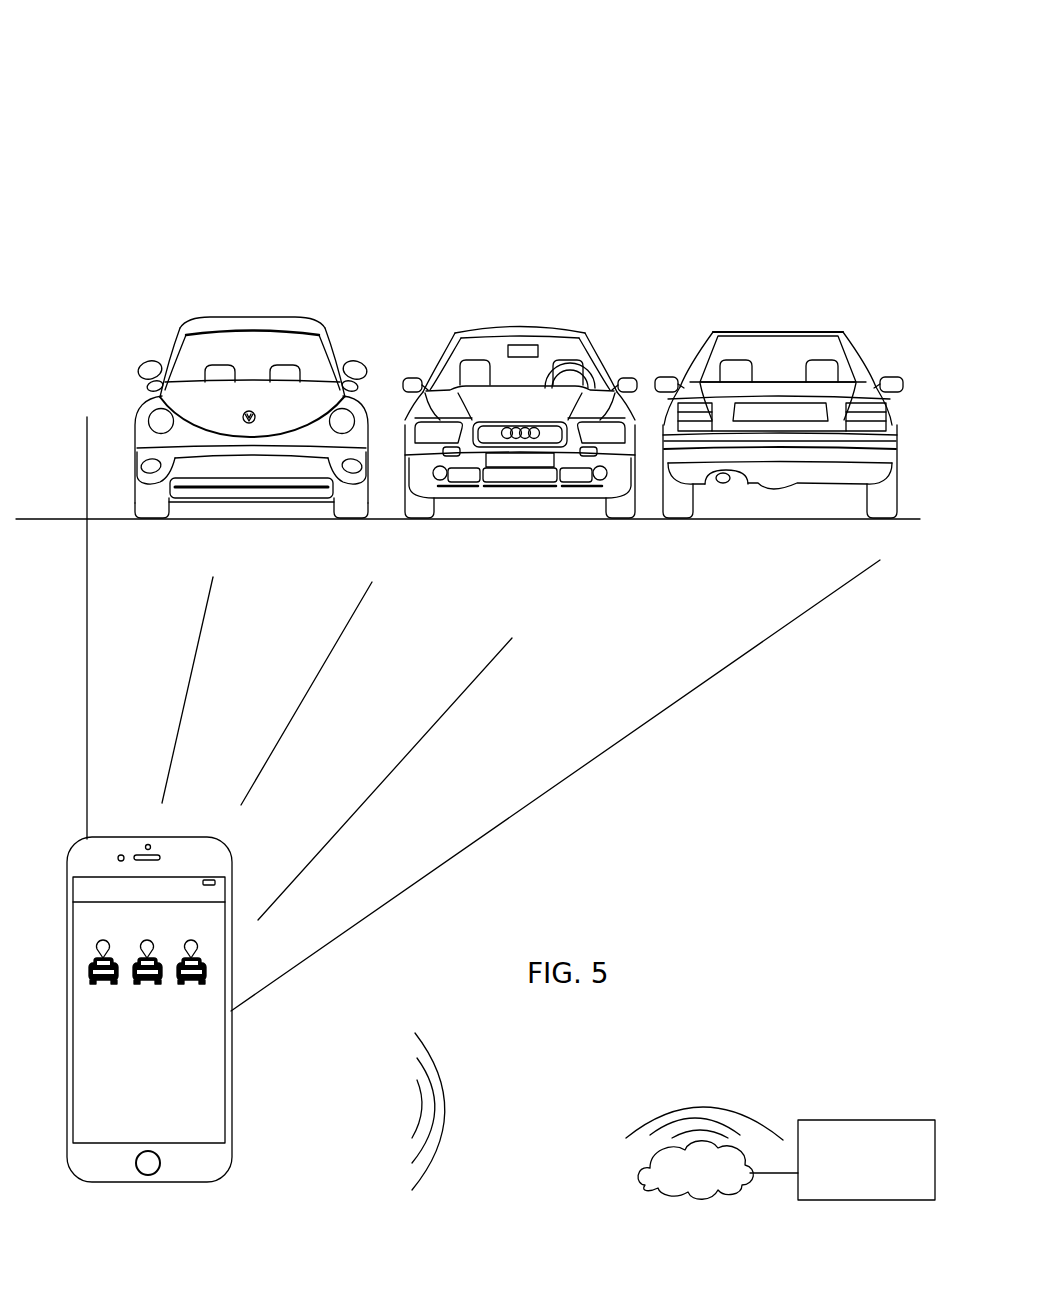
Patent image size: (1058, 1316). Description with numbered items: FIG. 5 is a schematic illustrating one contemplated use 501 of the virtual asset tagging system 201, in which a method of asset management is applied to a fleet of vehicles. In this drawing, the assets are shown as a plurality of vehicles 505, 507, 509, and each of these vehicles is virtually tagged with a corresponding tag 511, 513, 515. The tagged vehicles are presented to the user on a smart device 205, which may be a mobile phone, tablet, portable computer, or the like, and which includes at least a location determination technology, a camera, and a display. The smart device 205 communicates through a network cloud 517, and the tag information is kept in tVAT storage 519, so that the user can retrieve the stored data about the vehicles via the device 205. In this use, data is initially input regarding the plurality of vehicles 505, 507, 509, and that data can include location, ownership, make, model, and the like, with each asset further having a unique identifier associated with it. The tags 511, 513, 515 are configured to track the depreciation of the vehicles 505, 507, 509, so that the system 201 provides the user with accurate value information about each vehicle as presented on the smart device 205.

The system 201 is at (879, 57).
The smart device 205 is at (232, 1108).
The contemplated use 501 is at (157, 254).
The vehicle 505 is at (249, 318).
The vehicle 507 is at (514, 328).
The vehicle 509 is at (773, 328).
The tag 511 is at (103, 941).
The tag 513 is at (147, 941).
The tag 515 is at (191, 941).
The network cloud 517 is at (640, 1178).
The tVAT storage 519 is at (866, 1120).